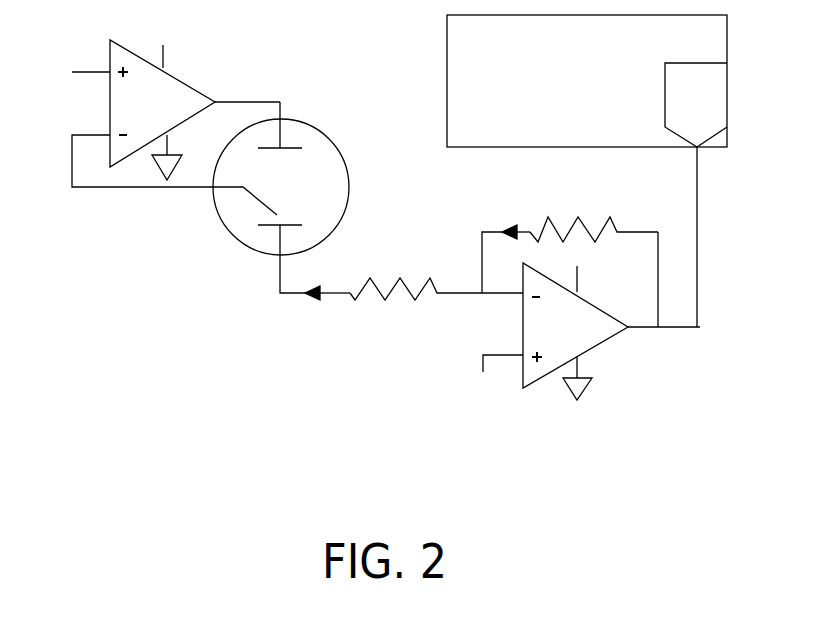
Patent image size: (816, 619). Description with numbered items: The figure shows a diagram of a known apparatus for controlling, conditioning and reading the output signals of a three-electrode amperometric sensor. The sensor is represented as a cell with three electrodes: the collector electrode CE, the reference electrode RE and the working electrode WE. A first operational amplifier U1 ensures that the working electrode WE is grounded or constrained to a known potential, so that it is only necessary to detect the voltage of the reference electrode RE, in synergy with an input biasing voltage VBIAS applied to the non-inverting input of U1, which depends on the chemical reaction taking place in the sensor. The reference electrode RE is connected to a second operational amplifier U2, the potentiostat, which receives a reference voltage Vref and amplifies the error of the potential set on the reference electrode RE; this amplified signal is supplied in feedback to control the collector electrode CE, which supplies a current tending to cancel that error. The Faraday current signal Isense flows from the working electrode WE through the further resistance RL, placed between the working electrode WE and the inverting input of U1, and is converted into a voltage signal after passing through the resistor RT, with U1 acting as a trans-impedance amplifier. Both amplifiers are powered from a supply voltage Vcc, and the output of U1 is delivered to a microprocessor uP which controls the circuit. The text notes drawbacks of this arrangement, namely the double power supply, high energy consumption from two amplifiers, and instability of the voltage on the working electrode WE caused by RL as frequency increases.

The second operational amplifier U2 is at (195, 110).
The first operational amplifier U1 is at (611, 331).
The reference voltage Vref is at (62, 71).
The supply voltage Vcc is at (372, 155).
The collector electrode CE is at (301, 114).
The reference electrode RE is at (187, 180).
The working electrode WE is at (316, 259).
The Faraday current signal Isense is at (394, 271).
The further resistance RL is at (436, 313).
The resistor RT is at (594, 250).
The input biasing voltage VBIAS is at (493, 388).
The microprocessor uP is at (587, 171).